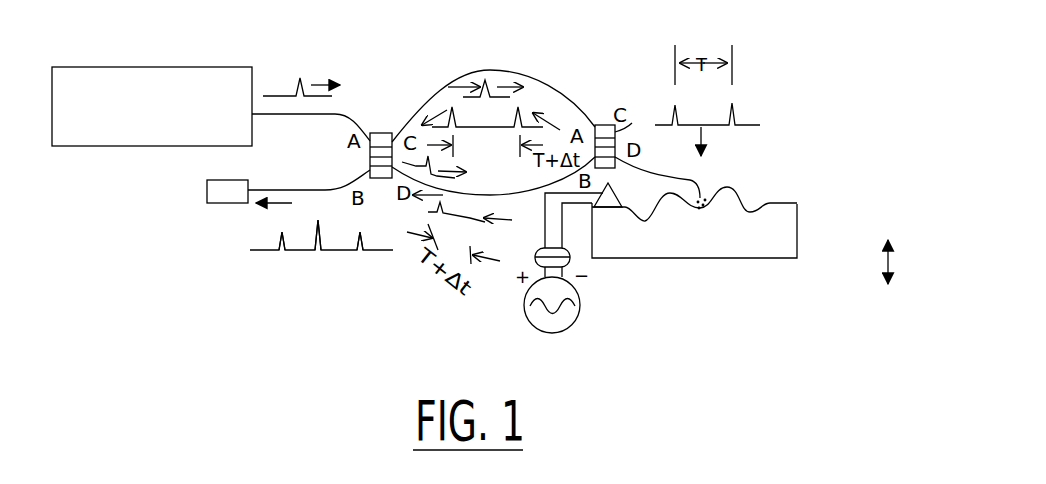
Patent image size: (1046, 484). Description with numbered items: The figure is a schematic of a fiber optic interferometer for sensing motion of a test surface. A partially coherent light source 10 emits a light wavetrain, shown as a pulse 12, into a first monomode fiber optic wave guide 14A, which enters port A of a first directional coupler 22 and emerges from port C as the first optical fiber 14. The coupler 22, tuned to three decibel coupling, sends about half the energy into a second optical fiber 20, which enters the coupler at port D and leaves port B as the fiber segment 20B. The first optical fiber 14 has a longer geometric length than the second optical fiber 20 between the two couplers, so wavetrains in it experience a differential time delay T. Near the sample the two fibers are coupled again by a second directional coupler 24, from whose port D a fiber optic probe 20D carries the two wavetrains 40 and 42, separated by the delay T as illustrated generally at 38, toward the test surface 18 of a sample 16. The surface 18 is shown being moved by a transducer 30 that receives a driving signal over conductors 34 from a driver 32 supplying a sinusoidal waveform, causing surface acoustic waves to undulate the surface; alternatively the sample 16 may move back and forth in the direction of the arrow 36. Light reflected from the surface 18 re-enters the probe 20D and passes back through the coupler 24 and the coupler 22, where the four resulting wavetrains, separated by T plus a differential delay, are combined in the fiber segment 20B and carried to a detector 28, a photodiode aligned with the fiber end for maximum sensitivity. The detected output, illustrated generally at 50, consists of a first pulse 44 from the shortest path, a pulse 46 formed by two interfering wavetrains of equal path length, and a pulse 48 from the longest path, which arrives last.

The partially coherent light source 10 is at (207, 67).
The light wavetrain pulse 12 is at (303, 77).
The first optical fiber 14 is at (520, 72).
The first monomode fiber optic wave guide 14A is at (277, 114).
The fiber optic wave guide segment 20B is at (312, 190).
The first directional coupler 22 is at (378, 133).
The second directional coupler 24 is at (600, 125).
The second optical fiber 20 is at (527, 189).
The fiber optic probe 20D is at (702, 177).
The time displacement illustration 38 is at (757, 104).
The first incoming wavetrain 40 is at (670, 107).
The second incoming wavetrain 42 is at (734, 105).
The sample 16 is at (797, 233).
The test surface 18 is at (797, 197).
The transducer 30 is at (613, 186).
The conductors 34 is at (535, 260).
The driver 32 is at (524, 314).
The detector 28 is at (220, 203).
The first pulse 44 is at (278, 243).
The second pulse 46 is at (332, 218).
The fourth pulse 48 is at (363, 240).
The detected pulse train 50 is at (302, 266).
The arrow 36 is at (892, 260).